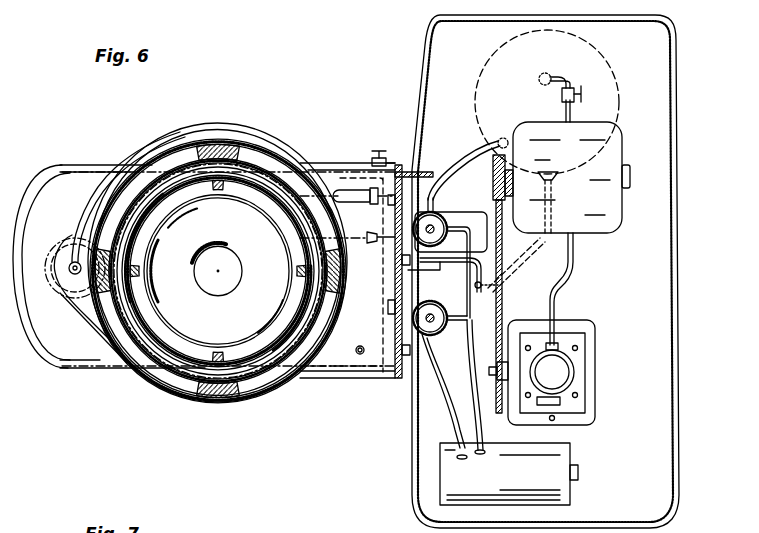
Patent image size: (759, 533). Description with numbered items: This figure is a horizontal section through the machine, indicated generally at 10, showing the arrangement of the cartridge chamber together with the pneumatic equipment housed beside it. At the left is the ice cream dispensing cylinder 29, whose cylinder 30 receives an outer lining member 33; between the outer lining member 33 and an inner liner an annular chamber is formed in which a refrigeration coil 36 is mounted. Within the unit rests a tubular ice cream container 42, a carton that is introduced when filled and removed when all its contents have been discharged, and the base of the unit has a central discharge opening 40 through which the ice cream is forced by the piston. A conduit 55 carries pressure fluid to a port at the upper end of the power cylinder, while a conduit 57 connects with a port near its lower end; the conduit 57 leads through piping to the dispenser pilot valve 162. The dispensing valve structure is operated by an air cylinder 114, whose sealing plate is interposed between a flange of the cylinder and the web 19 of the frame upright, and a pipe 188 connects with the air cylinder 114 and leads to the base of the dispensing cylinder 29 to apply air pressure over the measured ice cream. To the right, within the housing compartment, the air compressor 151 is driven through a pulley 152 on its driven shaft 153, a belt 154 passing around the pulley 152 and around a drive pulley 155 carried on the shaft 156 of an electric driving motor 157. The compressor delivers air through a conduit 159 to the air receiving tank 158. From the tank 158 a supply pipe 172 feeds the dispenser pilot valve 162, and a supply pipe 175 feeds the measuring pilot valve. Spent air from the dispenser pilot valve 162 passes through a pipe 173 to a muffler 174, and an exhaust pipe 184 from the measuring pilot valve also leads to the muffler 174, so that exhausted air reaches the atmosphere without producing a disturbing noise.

The wheel assembly 10 is at (57, 296).
The vertical bolting face 19 is at (394, 322).
The ice cream dispensing cylinder 29 is at (98, 355).
The cylinder 30 is at (148, 367).
The outer lining member 33 is at (218, 284).
The refrigeration coil 36 is at (218, 275).
The central discharge opening 40 is at (236, 269).
The tubular ice cream container 42 is at (218, 270).
The conduit 55 is at (352, 190).
The conduit 57 is at (370, 244).
The air cylinder 114 is at (405, 226).
The air compressor 151 is at (607, 361).
The pulley 152 is at (508, 330).
The driven shaft 153 is at (500, 413).
The belt 154 is at (500, 265).
The drive pulley 155 is at (494, 176).
The shaft 156 is at (505, 183).
The electric driving motor 157 is at (590, 158).
The air receiving tank 158 is at (583, 58).
The conduit 159 is at (568, 275).
The dispenser pilot valve 162 is at (450, 330).
The supply pipe 172 is at (432, 266).
The pipe 173 is at (458, 426).
The muffler 174 is at (509, 474).
The supply pipe 175 is at (470, 156).
The exhaust pipe 184 is at (470, 398).
The pipe 188 is at (140, 150).